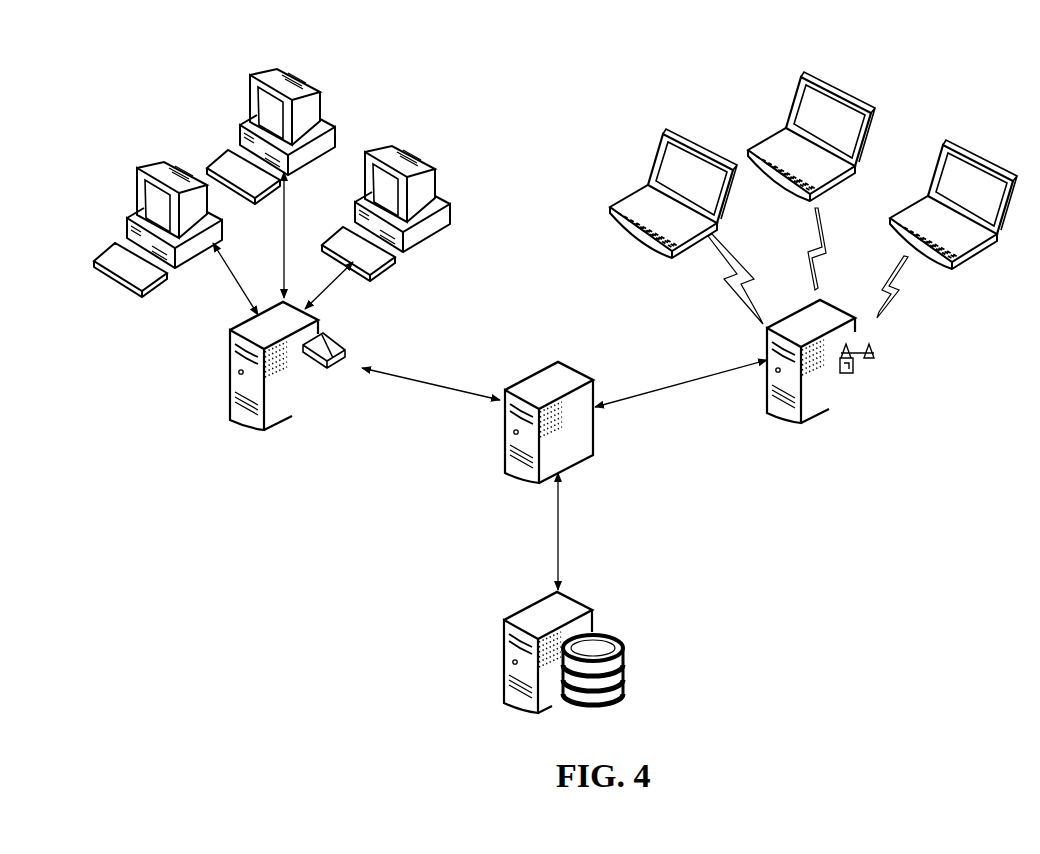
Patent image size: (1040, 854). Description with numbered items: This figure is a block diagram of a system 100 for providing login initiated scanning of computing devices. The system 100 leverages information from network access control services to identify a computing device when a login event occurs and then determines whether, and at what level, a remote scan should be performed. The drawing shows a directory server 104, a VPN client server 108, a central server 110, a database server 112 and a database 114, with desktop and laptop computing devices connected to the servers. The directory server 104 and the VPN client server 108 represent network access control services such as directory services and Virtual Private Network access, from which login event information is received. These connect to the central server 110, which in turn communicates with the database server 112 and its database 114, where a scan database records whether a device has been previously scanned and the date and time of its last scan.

The system for providing login initiated scanning of computing devices 100 is at (500, 100).
The directory server 104 is at (263, 350).
The VPN client server 108 is at (808, 343).
The central server 110 is at (547, 407).
The database server 112 is at (547, 633).
The database 114 is at (607, 652).